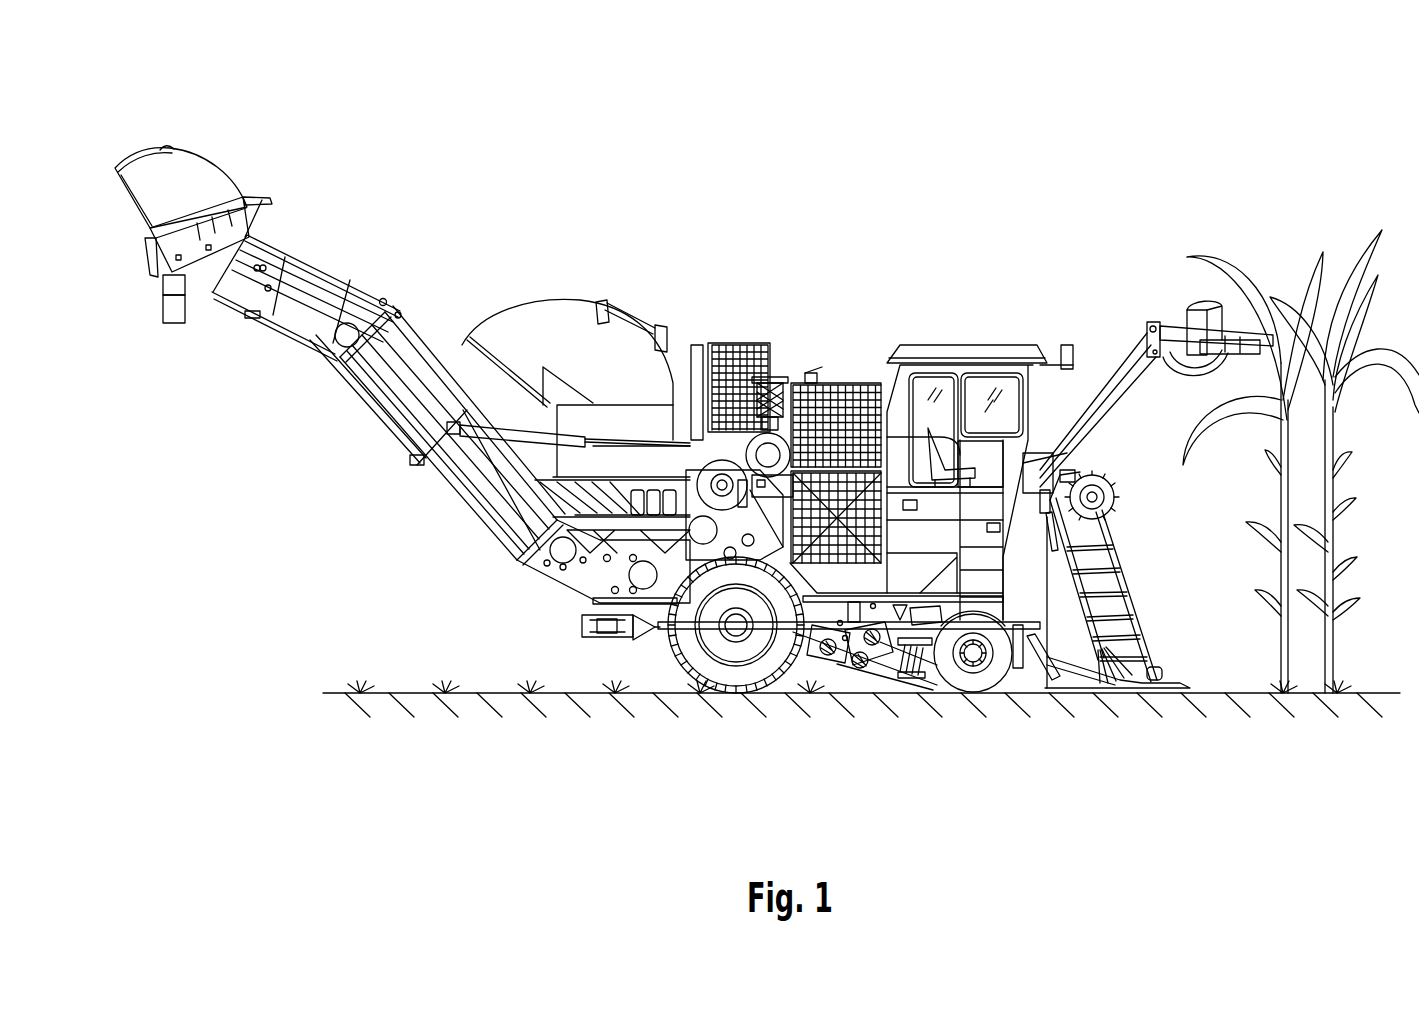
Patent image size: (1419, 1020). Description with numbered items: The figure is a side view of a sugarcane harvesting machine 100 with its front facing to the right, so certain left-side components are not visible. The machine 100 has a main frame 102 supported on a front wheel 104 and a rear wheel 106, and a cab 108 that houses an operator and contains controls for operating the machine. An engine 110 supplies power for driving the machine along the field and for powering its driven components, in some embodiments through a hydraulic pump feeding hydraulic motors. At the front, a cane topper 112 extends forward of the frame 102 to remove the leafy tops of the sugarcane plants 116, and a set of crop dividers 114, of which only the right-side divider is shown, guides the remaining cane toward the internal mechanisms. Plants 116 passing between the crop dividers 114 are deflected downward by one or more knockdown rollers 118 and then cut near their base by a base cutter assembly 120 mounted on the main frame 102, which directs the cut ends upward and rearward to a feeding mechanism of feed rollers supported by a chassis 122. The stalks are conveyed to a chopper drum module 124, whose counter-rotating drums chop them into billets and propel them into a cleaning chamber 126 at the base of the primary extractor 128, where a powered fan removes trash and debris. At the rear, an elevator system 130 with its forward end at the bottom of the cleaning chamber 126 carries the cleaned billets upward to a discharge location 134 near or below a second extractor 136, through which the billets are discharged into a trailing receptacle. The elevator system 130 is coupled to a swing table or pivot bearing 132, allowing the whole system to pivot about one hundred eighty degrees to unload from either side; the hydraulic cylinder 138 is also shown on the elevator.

The sugarcane harvesting machine 100 is at (561, 130).
The main frame 102 is at (1026, 678).
The front wheel 104 is at (975, 695).
The rear wheel 106 is at (737, 693).
The cab 108 is at (963, 345).
The engine 110 is at (928, 532).
The cane topper 112 is at (1185, 304).
The crop dividers 114 is at (1130, 604).
The sugarcane plants 116 is at (1274, 492).
The knockdown rollers 118 is at (1034, 648).
The base cutter assembly 120 is at (913, 688).
The chassis 122 is at (830, 668).
The chopper drum module 124 is at (697, 465).
The cleaning chamber 126 is at (617, 488).
The primary extractor 128 is at (533, 330).
The elevator system 130 is at (443, 473).
The pivot bearing 132 is at (575, 626).
The discharge location 134 is at (153, 295).
The second extractor 136 is at (141, 168).
The hydraulic cylinder 138 is at (497, 413).